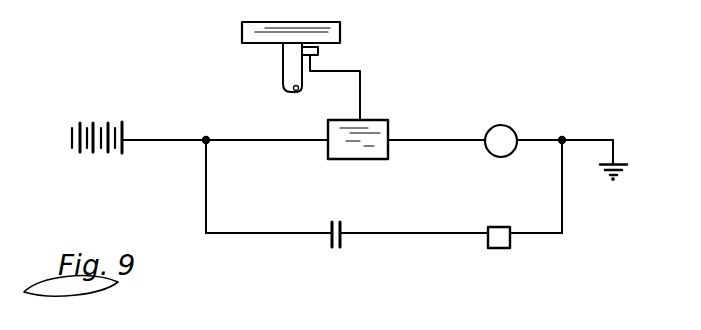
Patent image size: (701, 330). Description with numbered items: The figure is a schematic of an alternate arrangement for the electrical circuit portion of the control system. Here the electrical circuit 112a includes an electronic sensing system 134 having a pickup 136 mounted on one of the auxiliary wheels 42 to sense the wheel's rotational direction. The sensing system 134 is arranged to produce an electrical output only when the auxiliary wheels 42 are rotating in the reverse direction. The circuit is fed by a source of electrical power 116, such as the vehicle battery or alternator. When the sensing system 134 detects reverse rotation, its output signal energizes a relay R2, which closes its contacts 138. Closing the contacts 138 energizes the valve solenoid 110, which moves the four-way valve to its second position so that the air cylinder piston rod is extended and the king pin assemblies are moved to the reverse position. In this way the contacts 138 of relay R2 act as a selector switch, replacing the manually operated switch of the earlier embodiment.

The auxiliary wheel 42 is at (242, 35).
The pickup 136 is at (318, 51).
The electronic sensing system 134 is at (377, 120).
The electrical circuit 112a is at (443, 140).
The relay R2 is at (503, 134).
The source of electrical power 116 is at (122, 122).
The contacts 138 is at (339, 220).
The valve solenoid 110 is at (508, 227).